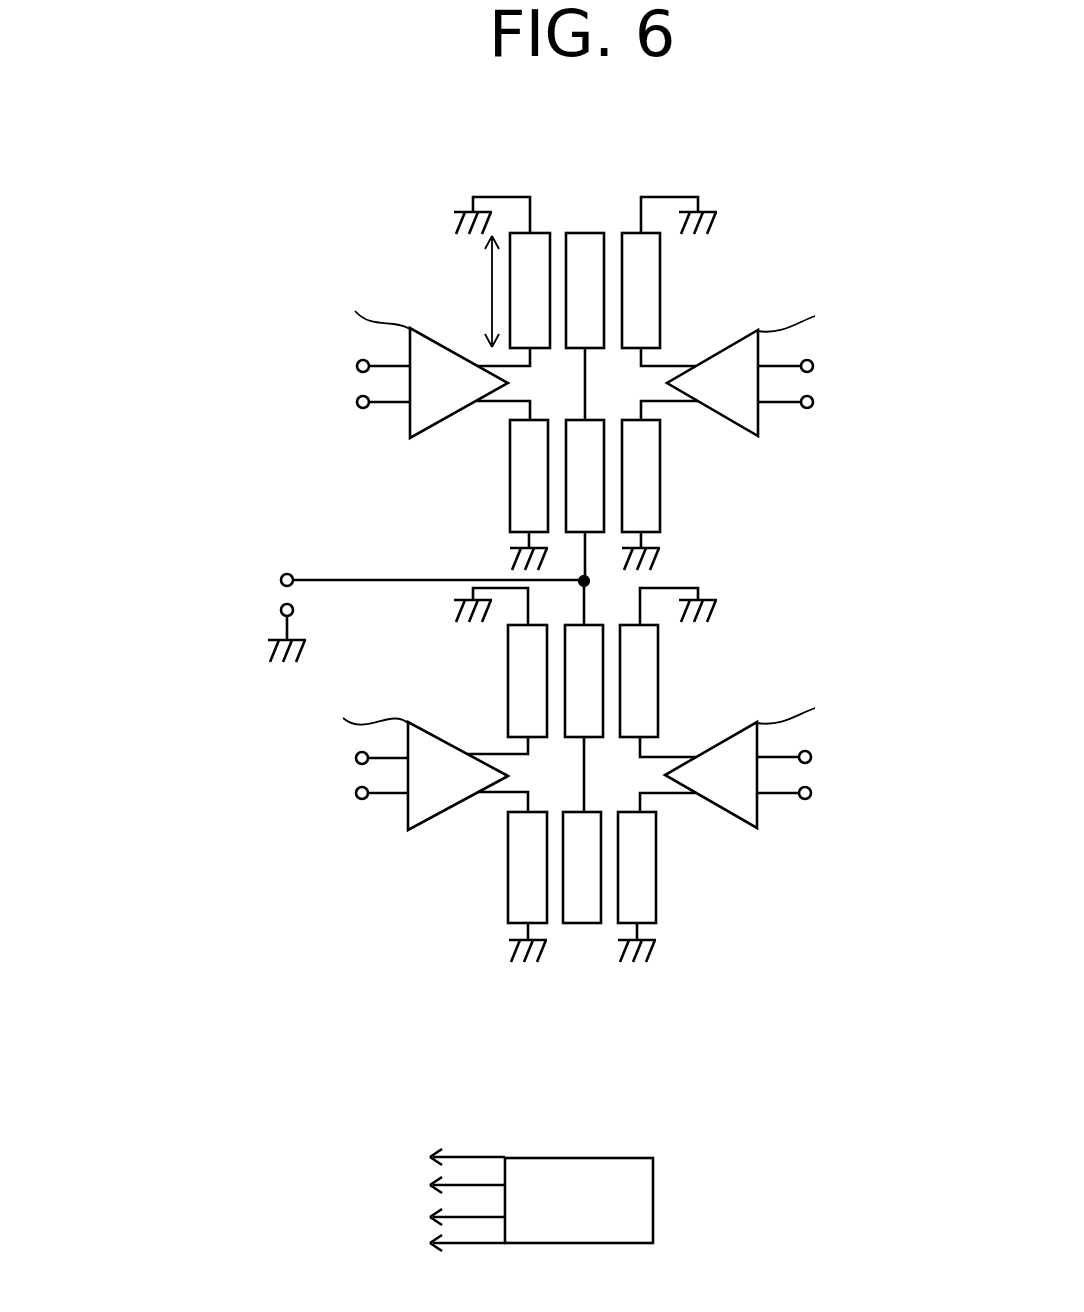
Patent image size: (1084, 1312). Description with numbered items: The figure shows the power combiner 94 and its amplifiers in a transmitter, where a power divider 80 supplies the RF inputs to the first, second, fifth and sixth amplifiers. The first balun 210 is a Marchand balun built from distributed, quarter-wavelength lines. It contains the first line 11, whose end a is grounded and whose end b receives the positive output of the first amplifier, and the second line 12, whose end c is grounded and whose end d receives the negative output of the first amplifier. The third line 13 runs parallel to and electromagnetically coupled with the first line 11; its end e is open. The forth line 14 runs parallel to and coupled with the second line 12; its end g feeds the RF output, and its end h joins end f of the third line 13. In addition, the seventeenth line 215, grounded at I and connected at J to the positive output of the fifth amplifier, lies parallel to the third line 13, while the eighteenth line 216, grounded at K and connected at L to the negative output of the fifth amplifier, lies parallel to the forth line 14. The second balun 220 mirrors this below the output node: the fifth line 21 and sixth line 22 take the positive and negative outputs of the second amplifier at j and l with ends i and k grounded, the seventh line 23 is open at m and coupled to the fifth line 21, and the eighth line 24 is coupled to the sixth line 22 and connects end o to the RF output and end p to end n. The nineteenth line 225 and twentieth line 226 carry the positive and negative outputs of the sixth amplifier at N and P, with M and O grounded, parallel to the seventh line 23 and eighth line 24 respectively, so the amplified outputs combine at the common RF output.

The first line 11 is at (660, 283).
The second line 12 is at (660, 473).
The third line 13 is at (602, 232).
The forth line 14 is at (566, 441).
The fifth line 21 is at (656, 866).
The sixth line 22 is at (658, 676).
The seventh line 23 is at (599, 923).
The eighth line 24 is at (562, 738).
The seventeenth line 215 is at (510, 262).
The eighteenth line 216 is at (510, 476).
The nineteenth line 225 is at (508, 869).
The twentieth line 226 is at (508, 678).
The first balun 210 is at (208, 380).
The second balun 220 is at (208, 847).
The power combiner 94 is at (266, 997).
The power divider 80 is at (653, 1196).